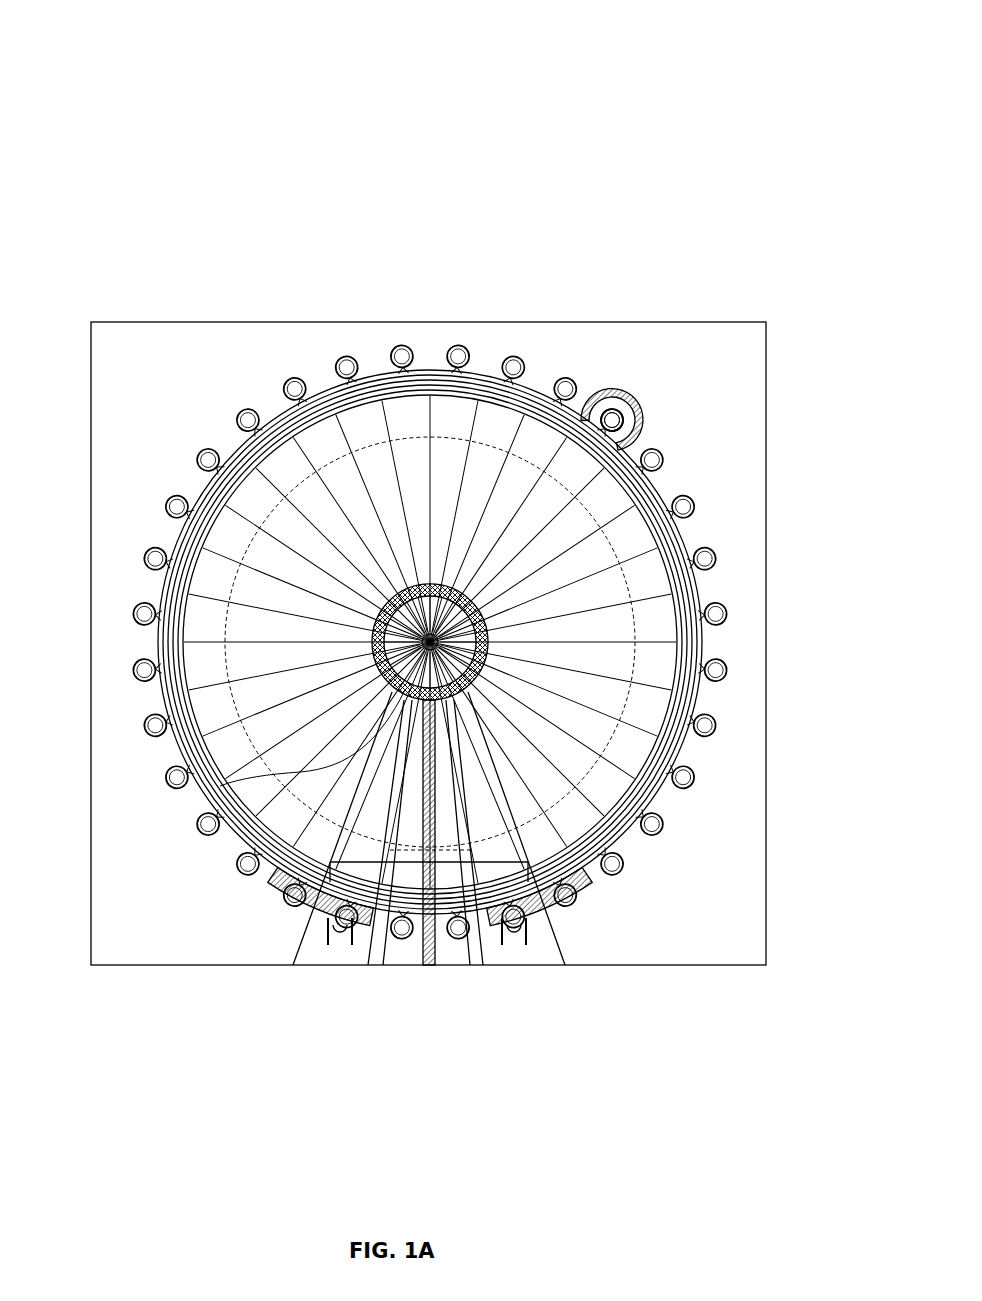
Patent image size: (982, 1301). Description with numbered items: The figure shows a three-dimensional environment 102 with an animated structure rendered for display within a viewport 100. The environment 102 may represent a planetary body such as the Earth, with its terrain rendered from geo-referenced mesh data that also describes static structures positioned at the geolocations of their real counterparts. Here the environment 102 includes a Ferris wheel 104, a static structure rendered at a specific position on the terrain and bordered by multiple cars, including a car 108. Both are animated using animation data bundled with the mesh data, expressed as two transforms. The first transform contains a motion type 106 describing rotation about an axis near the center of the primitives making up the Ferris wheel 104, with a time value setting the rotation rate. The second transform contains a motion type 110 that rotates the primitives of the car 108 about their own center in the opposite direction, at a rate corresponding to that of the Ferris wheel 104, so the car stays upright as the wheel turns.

The viewport 100 is at (754, 170).
The three-dimensional environment 102 is at (128, 534).
The Ferris wheel 104 is at (270, 410).
The motion type 106 is at (203, 800).
The car 108 is at (625, 419).
The motion type 110 is at (611, 388).